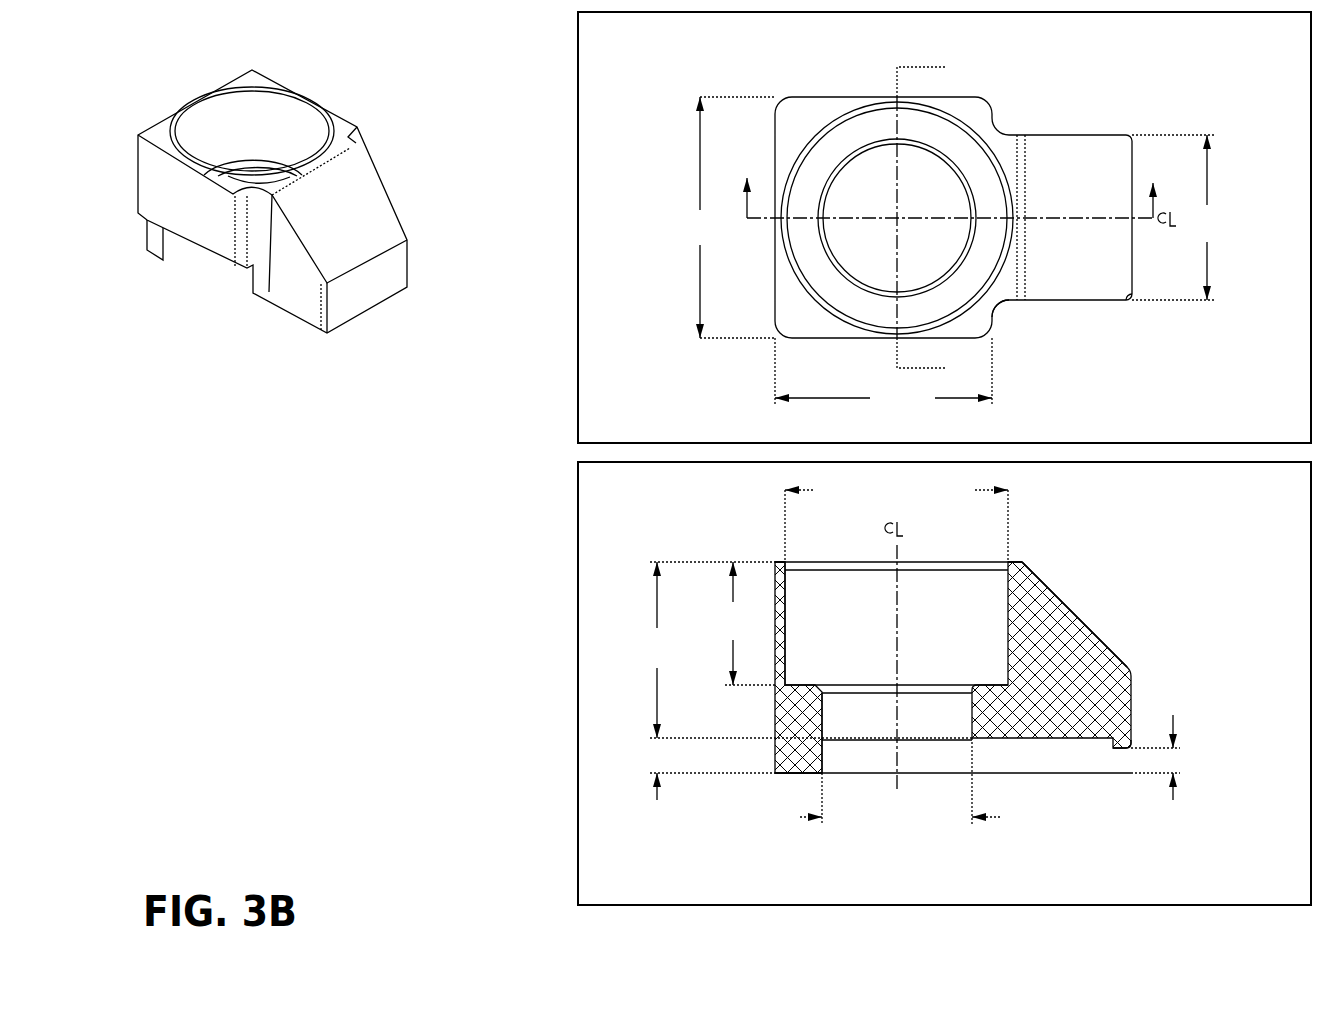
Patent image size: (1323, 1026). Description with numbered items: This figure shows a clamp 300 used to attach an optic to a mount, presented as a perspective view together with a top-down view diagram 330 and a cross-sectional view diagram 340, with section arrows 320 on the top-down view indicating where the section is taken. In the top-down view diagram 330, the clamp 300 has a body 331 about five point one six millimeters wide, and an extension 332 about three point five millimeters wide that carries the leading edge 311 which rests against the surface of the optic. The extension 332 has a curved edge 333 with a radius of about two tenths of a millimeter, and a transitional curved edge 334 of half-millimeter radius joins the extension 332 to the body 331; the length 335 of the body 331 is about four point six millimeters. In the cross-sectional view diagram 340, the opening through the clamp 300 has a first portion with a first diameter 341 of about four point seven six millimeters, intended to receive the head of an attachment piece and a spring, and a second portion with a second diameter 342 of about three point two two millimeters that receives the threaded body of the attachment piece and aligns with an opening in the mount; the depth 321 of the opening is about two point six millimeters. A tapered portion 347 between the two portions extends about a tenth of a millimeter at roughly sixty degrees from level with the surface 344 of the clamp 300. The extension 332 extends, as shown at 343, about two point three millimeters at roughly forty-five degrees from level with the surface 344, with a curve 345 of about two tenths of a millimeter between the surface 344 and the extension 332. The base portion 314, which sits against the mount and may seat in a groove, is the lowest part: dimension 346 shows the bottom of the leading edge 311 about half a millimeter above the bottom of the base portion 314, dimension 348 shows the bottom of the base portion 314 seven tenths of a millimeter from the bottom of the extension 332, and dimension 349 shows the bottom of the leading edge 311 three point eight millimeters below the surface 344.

The clamp 300 is at (188, 56).
The leading edge 311 is at (1132, 752).
The base portion 314 is at (797, 780).
The cross-sectional view diagram 320 is at (940, 67).
The opening depth 321 is at (742, 623).
The top-down view diagram 330 is at (577, 189).
The body 331 is at (728, 217).
The extension 332 is at (1110, 648).
The curved edge of extension 333 is at (1133, 308).
The transitional curved edge 334 is at (1010, 310).
The body length 335 is at (883, 375).
The cross-sectional view diagram 340 is at (577, 703).
The first diameter of first portion of opening 341 is at (896, 519).
The second diameter of second portion of opening 342 is at (900, 785).
The extension length and angle 343 is at (1082, 612).
The surface 344 is at (798, 543).
The curve between surface and extension 345 is at (1024, 558).
The leading edge offset 346 is at (1182, 749).
The tapered portion 347 is at (795, 752).
The base portion offset 348 is at (707, 771).
The leading edge height 349 is at (802, 650).